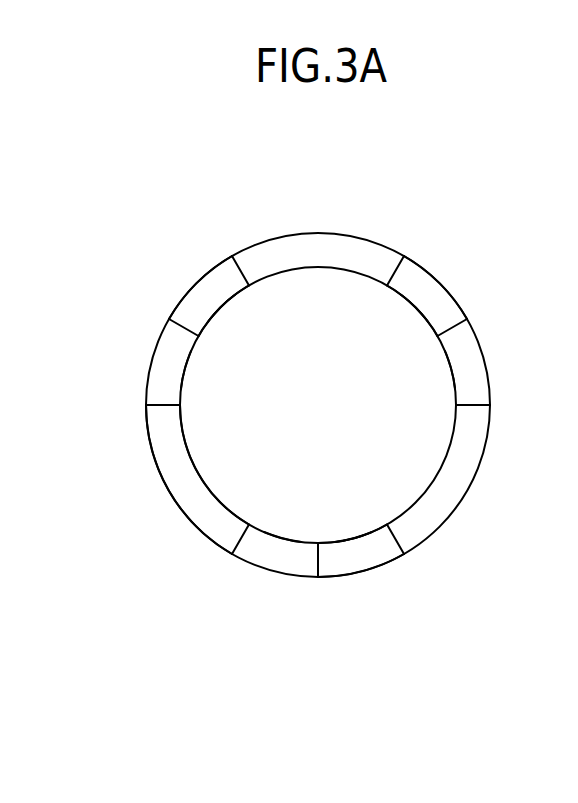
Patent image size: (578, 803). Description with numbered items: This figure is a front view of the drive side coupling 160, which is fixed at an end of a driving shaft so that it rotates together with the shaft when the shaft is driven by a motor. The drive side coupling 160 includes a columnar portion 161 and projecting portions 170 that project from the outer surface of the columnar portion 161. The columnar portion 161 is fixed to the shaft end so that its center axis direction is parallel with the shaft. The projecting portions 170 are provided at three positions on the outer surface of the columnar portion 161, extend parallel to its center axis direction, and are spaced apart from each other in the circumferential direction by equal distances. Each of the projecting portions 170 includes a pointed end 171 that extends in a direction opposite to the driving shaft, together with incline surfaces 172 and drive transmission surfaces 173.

The drive side coupling 160 is at (155, 193).
The columnar portion 161 is at (188, 476).
The projecting portions 170 is at (186, 283).
The pointed end 171 is at (188, 331).
The incline surfaces 172 is at (212, 299).
The drive transmission surfaces 173 is at (240, 270).